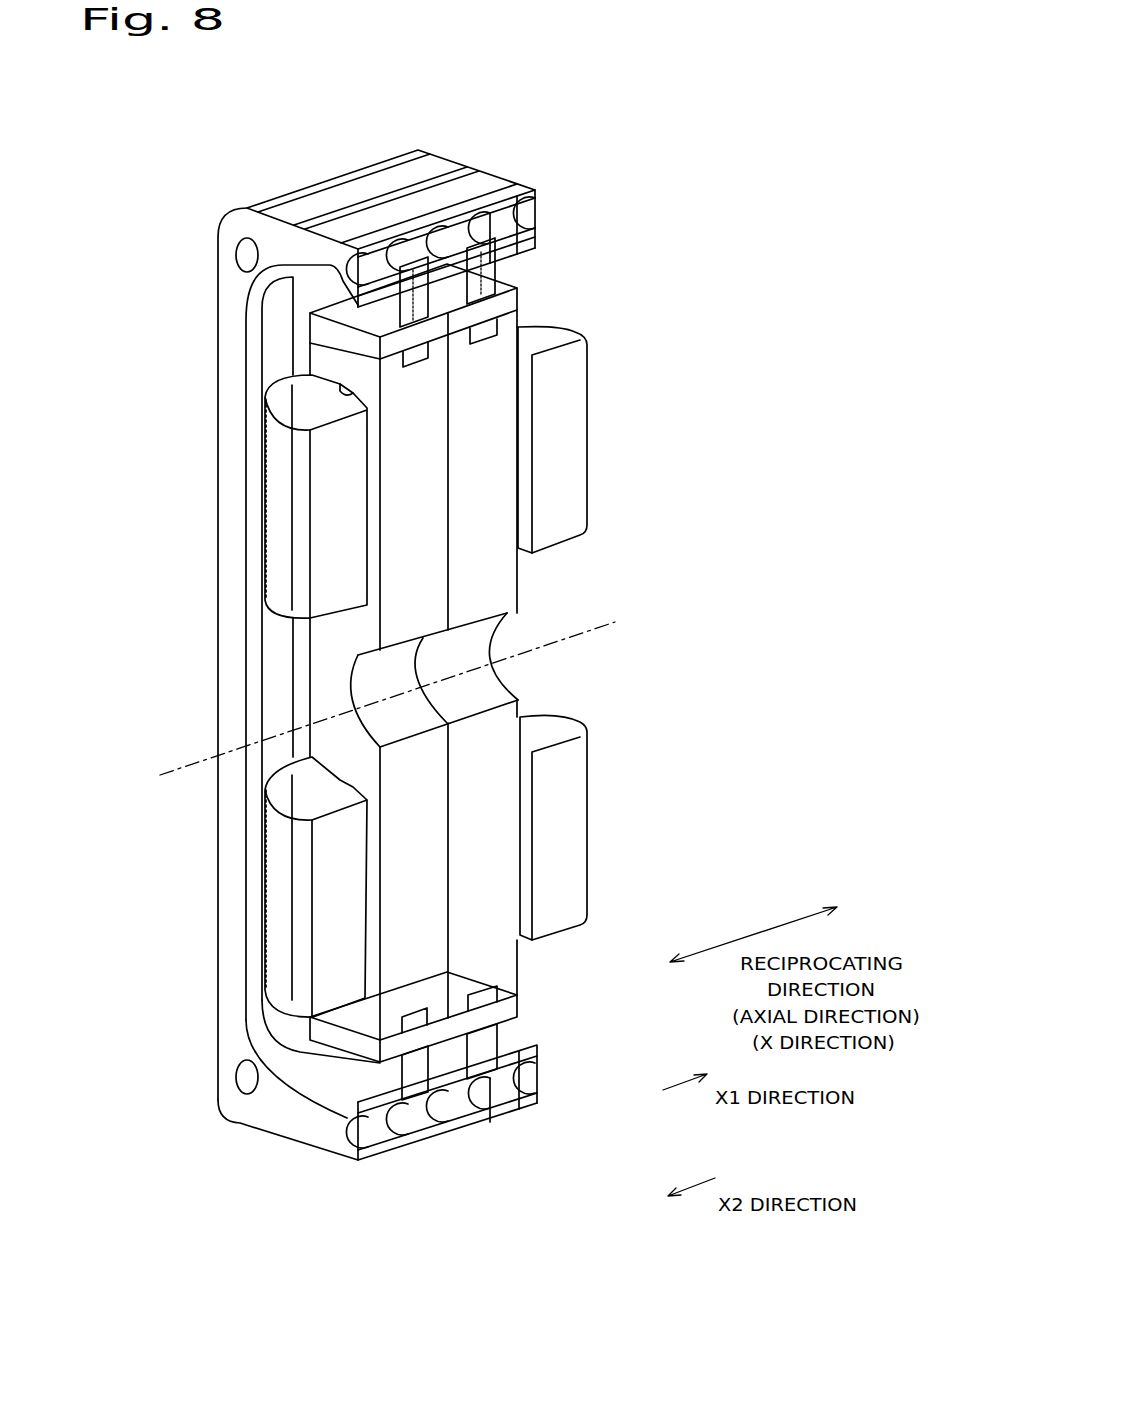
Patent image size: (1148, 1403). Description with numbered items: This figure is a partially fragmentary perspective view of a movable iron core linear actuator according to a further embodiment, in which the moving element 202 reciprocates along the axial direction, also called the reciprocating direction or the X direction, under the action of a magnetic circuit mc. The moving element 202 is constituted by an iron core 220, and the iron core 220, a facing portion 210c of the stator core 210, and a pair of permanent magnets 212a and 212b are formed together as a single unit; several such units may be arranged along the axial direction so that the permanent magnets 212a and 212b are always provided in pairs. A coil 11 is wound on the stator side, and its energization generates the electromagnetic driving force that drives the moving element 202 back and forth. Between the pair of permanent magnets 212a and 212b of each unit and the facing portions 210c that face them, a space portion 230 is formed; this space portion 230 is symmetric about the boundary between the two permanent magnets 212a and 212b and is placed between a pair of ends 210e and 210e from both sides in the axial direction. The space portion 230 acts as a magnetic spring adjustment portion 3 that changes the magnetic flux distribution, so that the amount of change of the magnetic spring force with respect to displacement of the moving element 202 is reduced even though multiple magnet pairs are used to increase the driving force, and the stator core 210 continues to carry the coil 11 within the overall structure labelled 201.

The magnetic spring adjustment portion 3 is at (485, 617).
The coil 11 is at (568, 458).
The mover 201 is at (440, 663).
The moving element 202 is at (427, 617).
The stator core 210 is at (425, 663).
The facing portion 210c is at (331, 359).
The end 210e is at (518, 365).
The permanent magnet 212a is at (458, 312).
The permanent magnet 212b is at (418, 295).
The iron core 220 is at (343, 213).
The space portion 230 is at (495, 340).
The magnetic circuit mc is at (742, 470).